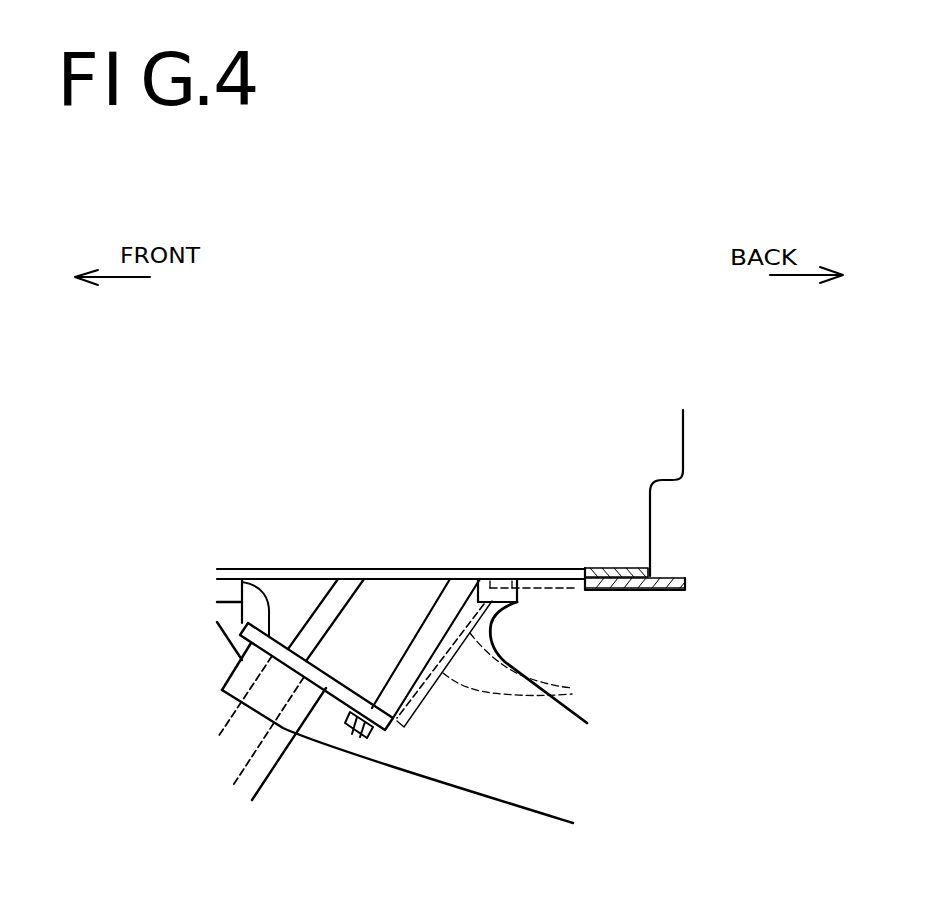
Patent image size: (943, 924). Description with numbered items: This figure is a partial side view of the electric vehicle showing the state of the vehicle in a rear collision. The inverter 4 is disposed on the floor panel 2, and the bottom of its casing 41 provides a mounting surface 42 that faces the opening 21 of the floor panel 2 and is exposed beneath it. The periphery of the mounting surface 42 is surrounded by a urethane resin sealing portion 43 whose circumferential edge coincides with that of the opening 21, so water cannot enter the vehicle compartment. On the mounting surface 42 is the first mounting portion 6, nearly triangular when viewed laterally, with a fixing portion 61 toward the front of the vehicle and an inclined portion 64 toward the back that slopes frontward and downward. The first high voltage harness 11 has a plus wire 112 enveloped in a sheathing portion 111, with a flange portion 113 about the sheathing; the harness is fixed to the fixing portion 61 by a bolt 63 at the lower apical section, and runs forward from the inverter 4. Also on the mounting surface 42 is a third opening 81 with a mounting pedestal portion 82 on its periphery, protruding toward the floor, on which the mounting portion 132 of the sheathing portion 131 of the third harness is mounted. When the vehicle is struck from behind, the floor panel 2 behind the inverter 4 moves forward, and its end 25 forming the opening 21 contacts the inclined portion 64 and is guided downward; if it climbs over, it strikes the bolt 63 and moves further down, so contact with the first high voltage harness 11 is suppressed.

The floor panel 2 is at (670, 589).
The opening 21 is at (577, 588).
The end (opening edge) of the floor panel 25 is at (478, 587).
The inverter 4 is at (578, 351).
The casing 41 is at (667, 430).
The mounting surface 42 is at (567, 565).
The sealing portion 43 is at (638, 572).
The first mounting portion 6 is at (405, 592).
The fixing portion 61 is at (262, 600).
The bolt 63 is at (357, 741).
The inclined portion (guide portion) 64 is at (417, 692).
The third opening 81 is at (522, 590).
The mounting pedestal portion 82 is at (227, 592).
The first high voltage harness 11 is at (217, 703).
The sheathing portion 111 is at (255, 792).
The plus wire 112 is at (232, 787).
The flange portion 113 is at (344, 709).
The sheathing portion 131 is at (577, 715).
The mounting portion 132 is at (235, 610).